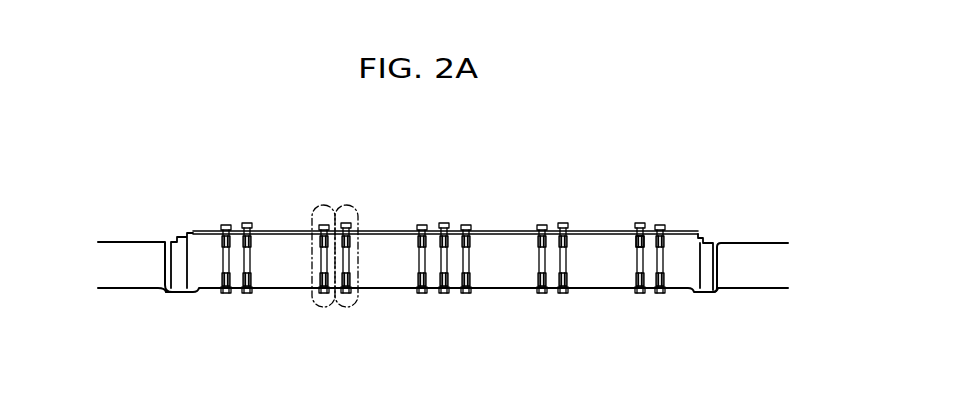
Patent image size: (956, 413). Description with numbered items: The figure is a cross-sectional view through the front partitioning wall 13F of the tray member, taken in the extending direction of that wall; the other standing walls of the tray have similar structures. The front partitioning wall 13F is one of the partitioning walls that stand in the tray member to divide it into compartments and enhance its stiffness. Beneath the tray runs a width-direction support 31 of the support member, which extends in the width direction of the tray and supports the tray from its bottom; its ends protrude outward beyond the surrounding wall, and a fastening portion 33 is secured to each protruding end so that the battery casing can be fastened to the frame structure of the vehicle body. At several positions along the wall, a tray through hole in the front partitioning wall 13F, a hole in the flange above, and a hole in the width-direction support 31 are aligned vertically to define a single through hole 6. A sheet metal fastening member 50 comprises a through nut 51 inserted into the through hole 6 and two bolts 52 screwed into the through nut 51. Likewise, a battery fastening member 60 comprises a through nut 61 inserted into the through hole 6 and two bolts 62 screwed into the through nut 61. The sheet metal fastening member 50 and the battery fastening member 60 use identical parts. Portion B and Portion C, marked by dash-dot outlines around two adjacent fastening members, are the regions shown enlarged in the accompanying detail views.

The sheet metal fastening member 50 is at (215, 257).
The battery fastening member 60 is at (257, 264).
The width-direction support 31 is at (208, 292).
The fastening portion 33 is at (762, 241).
The front partitioning wall 13F is at (678, 274).
The through hole 6 is at (567, 258).
The bolt 62 is at (641, 223).
The through nut 61 is at (636, 254).
The bolt 52 is at (668, 252).
The through nut 51 is at (680, 250).
The Portion B is at (322, 204).
The Portion C is at (350, 204).